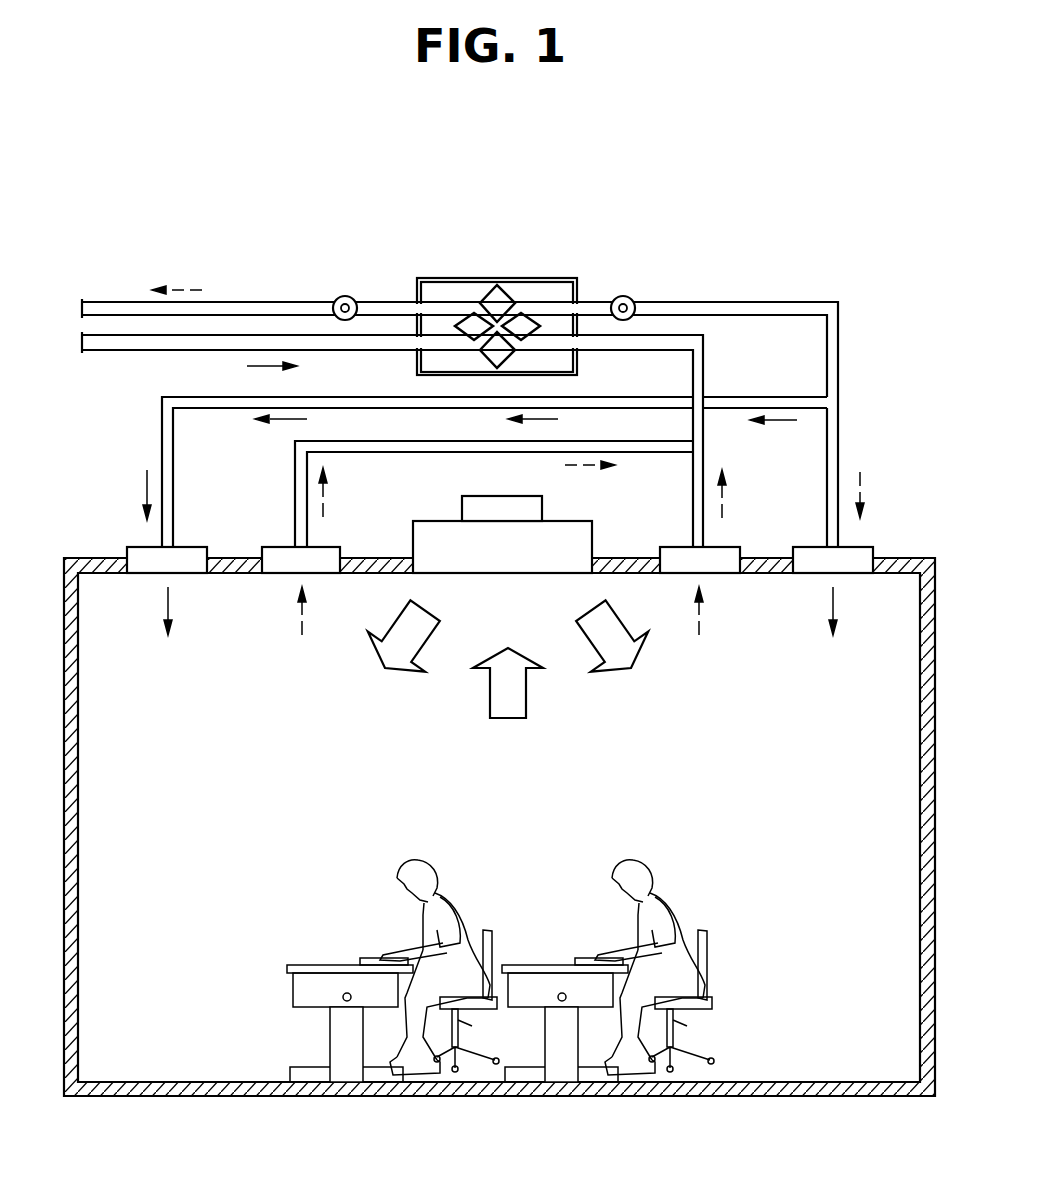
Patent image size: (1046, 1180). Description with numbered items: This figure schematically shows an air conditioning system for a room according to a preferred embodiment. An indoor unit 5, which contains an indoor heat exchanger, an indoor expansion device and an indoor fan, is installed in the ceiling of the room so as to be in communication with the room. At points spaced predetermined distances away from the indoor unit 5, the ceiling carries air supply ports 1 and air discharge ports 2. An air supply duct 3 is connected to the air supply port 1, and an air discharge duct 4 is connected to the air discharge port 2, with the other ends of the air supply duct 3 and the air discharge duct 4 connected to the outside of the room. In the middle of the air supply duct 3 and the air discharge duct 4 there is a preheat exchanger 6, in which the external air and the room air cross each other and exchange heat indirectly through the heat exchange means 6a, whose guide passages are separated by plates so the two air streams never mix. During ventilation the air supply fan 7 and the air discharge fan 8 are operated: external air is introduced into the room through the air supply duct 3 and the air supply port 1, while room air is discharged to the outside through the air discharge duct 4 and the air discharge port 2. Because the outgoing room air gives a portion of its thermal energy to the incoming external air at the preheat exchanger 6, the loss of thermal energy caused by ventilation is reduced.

The air supply port 1 is at (188, 560).
The air discharge port 2 is at (325, 557).
The air supply duct 3 is at (113, 350).
The air discharge duct 4 is at (112, 302).
The indoor unit 5 is at (580, 540).
The preheat exchanger 6 is at (475, 278).
The heat exchange means 6a is at (507, 293).
The air supply fan 7 is at (623, 296).
The air discharge fan 8 is at (345, 296).